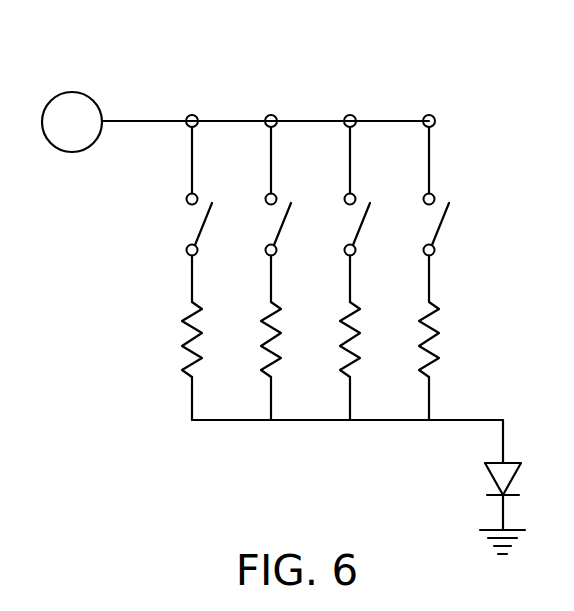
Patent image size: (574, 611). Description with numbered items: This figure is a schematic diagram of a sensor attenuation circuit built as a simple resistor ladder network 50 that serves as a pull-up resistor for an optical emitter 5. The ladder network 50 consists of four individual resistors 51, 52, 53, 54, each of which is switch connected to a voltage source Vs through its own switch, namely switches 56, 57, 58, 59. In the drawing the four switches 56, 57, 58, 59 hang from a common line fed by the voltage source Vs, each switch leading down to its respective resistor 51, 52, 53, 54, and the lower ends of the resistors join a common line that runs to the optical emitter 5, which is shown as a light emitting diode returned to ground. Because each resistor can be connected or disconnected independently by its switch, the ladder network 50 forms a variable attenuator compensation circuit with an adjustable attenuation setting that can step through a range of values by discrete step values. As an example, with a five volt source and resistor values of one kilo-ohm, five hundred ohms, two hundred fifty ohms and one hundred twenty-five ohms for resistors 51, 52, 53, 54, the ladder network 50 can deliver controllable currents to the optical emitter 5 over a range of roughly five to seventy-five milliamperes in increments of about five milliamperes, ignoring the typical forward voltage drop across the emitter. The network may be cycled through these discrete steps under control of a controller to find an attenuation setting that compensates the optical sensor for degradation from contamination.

The resistor ladder network 50 is at (358, 72).
The resistor 51 is at (183, 323).
The resistor 52 is at (262, 348).
The resistor 53 is at (341, 323).
The resistor 54 is at (420, 348).
The switch 56 is at (186, 220).
The switch 57 is at (270, 220).
The switch 58 is at (351, 220).
The switch 59 is at (431, 220).
The optical emitter 5 is at (492, 478).